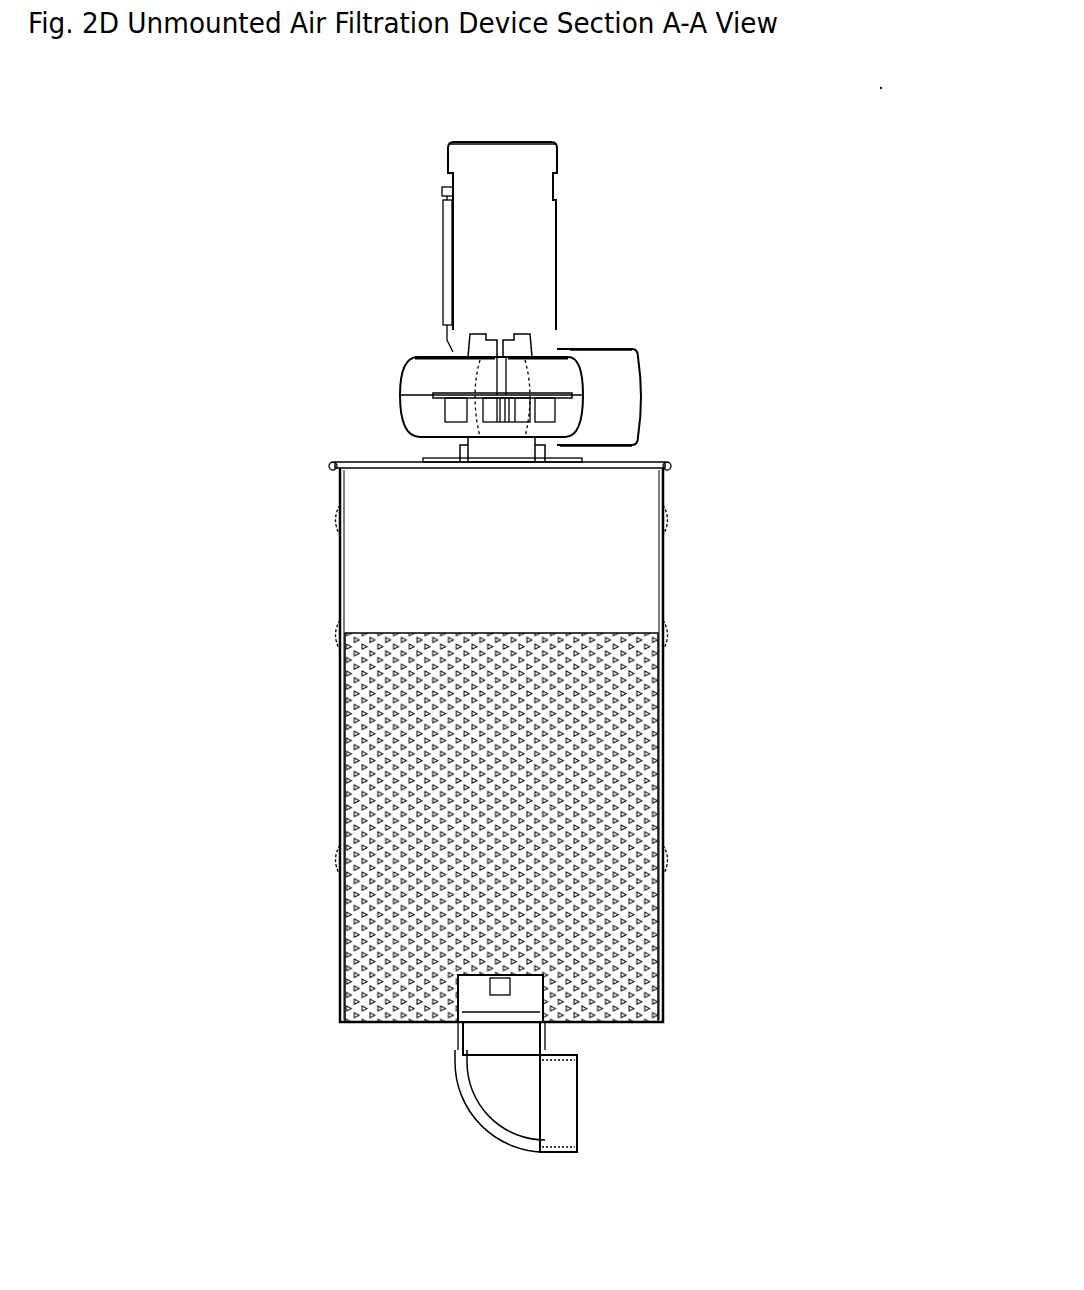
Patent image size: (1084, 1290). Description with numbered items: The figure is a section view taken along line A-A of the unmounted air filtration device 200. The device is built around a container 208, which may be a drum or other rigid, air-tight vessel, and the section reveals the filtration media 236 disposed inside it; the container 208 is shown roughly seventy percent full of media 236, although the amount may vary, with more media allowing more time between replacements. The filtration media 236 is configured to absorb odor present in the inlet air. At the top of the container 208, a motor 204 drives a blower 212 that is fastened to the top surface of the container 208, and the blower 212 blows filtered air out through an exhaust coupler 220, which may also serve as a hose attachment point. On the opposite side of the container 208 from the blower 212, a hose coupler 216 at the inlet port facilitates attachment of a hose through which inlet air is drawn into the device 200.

The unmounted air filtration device 200 is at (876, 94).
The motor 204 is at (478, 196).
The container 208 is at (340, 578).
The blower 212 is at (432, 380).
The hose coupler 216 is at (558, 1113).
The exhaust coupler 220 is at (620, 385).
The filtration media 236 is at (385, 805).